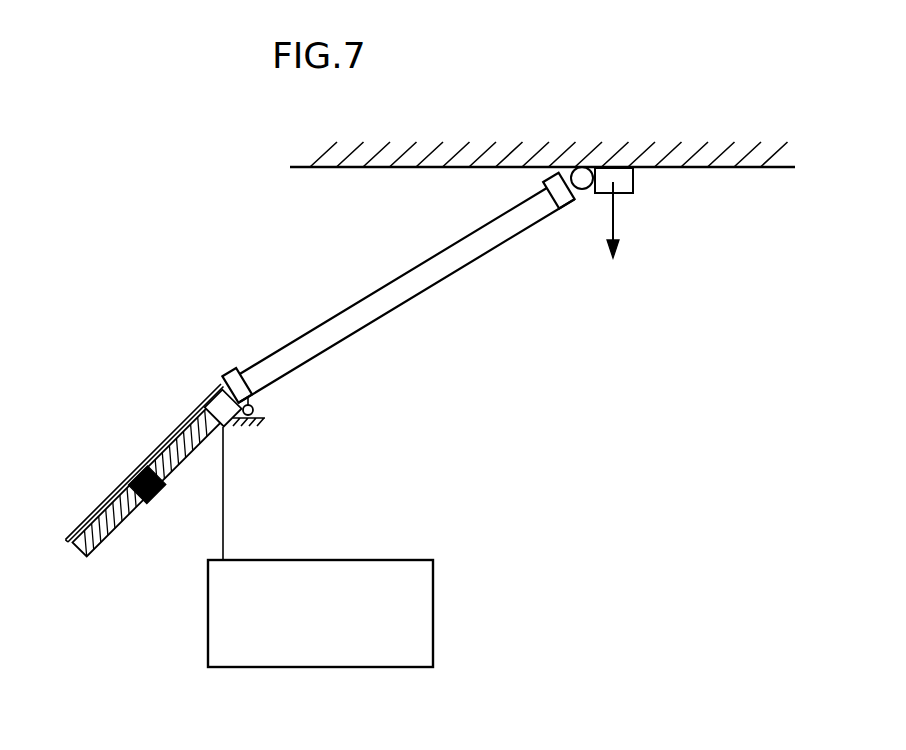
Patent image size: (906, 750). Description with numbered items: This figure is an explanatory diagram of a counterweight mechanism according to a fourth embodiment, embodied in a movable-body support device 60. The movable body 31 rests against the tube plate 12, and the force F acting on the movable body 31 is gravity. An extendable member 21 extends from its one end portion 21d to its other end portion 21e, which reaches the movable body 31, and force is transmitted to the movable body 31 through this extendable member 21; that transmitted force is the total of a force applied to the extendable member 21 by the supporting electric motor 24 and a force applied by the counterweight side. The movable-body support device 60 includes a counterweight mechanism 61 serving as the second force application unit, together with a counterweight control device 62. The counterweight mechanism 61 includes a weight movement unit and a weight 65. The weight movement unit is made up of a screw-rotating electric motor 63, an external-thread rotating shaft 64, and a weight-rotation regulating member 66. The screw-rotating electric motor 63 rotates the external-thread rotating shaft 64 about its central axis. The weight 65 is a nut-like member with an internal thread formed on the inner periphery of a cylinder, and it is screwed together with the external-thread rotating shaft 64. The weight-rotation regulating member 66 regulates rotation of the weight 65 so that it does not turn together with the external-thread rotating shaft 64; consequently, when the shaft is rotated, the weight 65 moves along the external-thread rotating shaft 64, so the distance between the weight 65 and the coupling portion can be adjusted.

The tube plate 12 is at (750, 169).
The extendable member 21 is at (403, 288).
The first end portion of arm 21d is at (262, 375).
The second end portion of arm 21e is at (561, 193).
The supporting electric motor 24 is at (255, 411).
The movable body 31 is at (634, 181).
The force F is at (617, 221).
The movable-body support device 60 is at (243, 270).
The counterweight mechanism 61 is at (138, 453).
The counterweight control device 62 is at (435, 613).
The screw-rotating electric motor 63 is at (218, 386).
The external-thread rotating shaft 64 is at (193, 452).
The weight 65 is at (147, 508).
The weight-rotation regulating member 66 is at (108, 487).